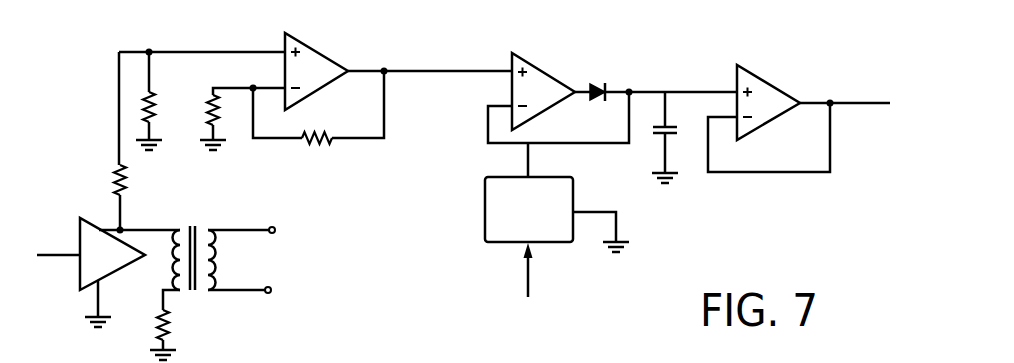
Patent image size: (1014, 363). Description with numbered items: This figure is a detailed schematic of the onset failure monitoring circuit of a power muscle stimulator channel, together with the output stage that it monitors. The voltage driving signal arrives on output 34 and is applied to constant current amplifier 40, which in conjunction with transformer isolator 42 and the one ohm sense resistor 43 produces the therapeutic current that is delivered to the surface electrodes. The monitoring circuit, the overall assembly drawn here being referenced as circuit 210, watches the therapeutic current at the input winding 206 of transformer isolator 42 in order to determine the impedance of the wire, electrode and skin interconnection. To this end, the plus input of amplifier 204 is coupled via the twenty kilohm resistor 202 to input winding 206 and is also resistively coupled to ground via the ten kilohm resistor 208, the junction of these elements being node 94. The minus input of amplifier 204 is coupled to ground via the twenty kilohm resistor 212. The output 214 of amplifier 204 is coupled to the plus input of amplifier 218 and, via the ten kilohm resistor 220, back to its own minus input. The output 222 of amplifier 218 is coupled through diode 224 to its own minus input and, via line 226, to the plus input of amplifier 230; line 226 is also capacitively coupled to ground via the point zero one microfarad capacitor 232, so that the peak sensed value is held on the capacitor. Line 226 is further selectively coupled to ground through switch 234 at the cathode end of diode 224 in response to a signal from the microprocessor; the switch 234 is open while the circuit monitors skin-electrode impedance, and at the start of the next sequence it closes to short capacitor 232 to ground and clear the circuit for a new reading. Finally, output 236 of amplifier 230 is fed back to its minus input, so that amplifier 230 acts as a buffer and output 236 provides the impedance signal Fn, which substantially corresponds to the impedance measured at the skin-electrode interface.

The output 34 is at (58, 254).
The constant current amplifier 40 is at (95, 221).
The transformer isolator 42 is at (204, 226).
The sense resistor 43 is at (178, 326).
The signal node 94 is at (145, 50).
The resistor 202 is at (113, 185).
The amplifier 204 is at (318, 52).
The input winding 206 is at (180, 228).
The resistor 208 is at (158, 96).
The circuit 210 is at (393, 343).
The resistor 212 is at (224, 96).
The output 214 is at (412, 68).
The amplifier 218 is at (526, 58).
The resistor 220 is at (314, 146).
The output 222 is at (583, 86).
The diode 224 is at (612, 82).
The line 226 is at (648, 90).
The amplifier 230 is at (764, 81).
The capacitor 232 is at (646, 128).
The switch 234 is at (485, 226).
The output 236 is at (843, 105).